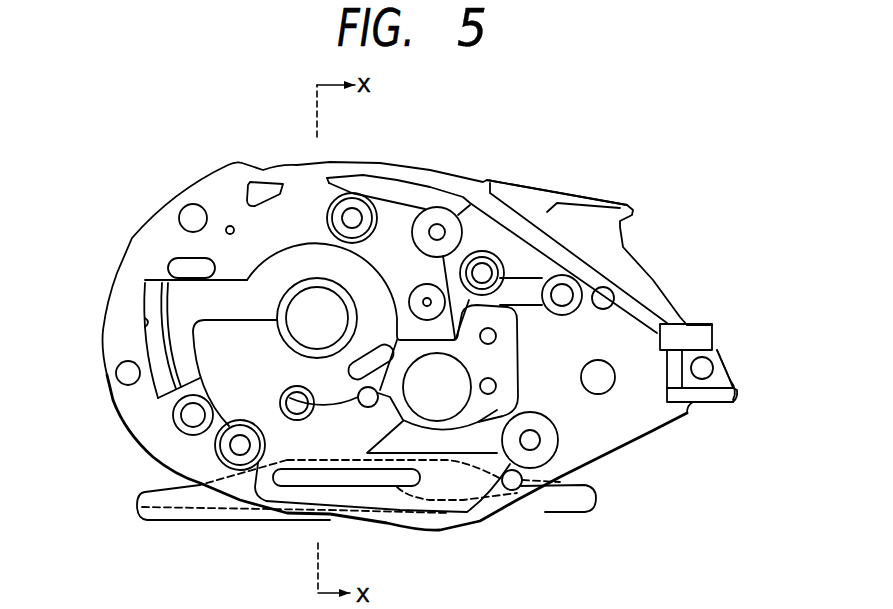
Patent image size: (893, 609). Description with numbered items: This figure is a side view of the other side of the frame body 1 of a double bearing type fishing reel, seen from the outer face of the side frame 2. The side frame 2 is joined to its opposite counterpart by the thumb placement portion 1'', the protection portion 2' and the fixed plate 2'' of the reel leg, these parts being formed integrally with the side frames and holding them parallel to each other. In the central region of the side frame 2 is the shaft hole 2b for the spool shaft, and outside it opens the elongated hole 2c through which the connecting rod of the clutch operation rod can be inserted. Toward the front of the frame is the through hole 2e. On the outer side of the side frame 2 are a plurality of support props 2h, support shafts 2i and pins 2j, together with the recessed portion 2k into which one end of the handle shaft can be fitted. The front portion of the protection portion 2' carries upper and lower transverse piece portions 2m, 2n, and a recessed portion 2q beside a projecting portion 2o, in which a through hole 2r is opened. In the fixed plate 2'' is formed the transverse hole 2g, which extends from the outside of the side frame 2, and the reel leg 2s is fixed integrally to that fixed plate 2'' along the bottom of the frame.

The frame body 1 is at (386, 243).
The side frame 2 is at (375, 352).
The thumb placement portion 1'' is at (557, 160).
The protection portion 2' is at (734, 399).
The fixed plate 2'' is at (380, 423).
The shaft hole 2b is at (306, 290).
The elongated hole 2c is at (145, 329).
The through hole 2e is at (611, 392).
The transverse hole 2g is at (299, 485).
The support props 2h is at (576, 285).
The support shafts 2i is at (368, 199).
The pins 2j is at (490, 253).
The recessed portion 2k is at (438, 414).
The upper transverse piece portion 2m is at (706, 333).
The lower transverse piece portion 2n is at (725, 406).
The projecting portion 2o is at (727, 360).
The recessed portion 2q is at (731, 378).
The through hole 2r is at (704, 364).
The reel leg 2s is at (140, 498).